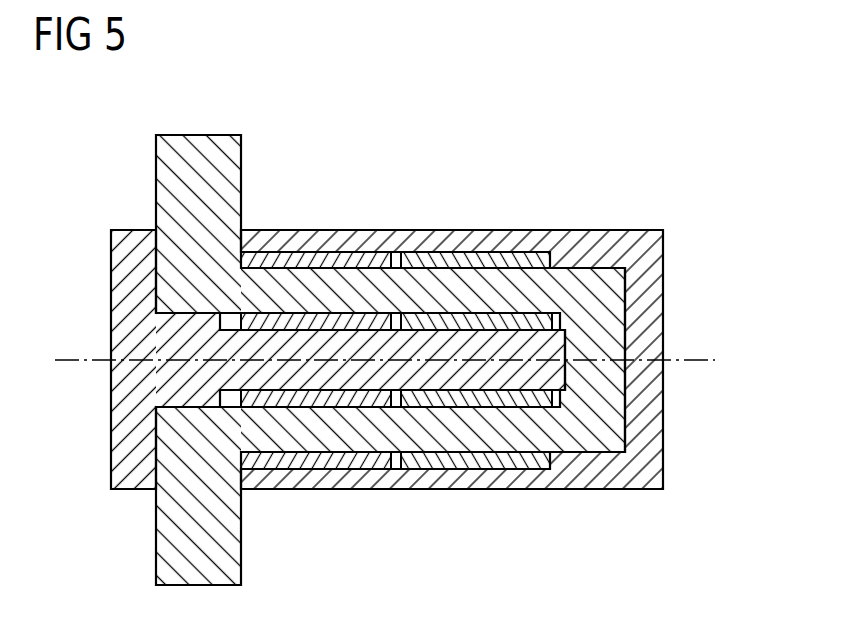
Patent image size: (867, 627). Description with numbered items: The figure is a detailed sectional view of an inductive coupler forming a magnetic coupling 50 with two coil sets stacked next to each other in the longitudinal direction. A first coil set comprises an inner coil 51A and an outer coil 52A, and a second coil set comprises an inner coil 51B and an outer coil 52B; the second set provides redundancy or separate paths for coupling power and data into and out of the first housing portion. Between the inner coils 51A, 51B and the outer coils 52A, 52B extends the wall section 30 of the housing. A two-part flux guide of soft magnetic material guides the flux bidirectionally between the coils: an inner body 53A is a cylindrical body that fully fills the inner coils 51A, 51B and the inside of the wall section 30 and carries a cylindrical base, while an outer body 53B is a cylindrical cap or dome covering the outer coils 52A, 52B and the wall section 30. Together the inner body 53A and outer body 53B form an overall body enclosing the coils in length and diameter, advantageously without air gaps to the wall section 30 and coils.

The wall section 30 is at (205, 138).
The magnetic coupling 50 is at (622, 171).
The first inner coil 51A is at (320, 400).
The second inner coil 51B is at (473, 400).
The first outer coil 52A is at (320, 260).
The second outer coil 52B is at (470, 258).
The inner body 53A is at (122, 411).
The outer body 53B is at (650, 429).